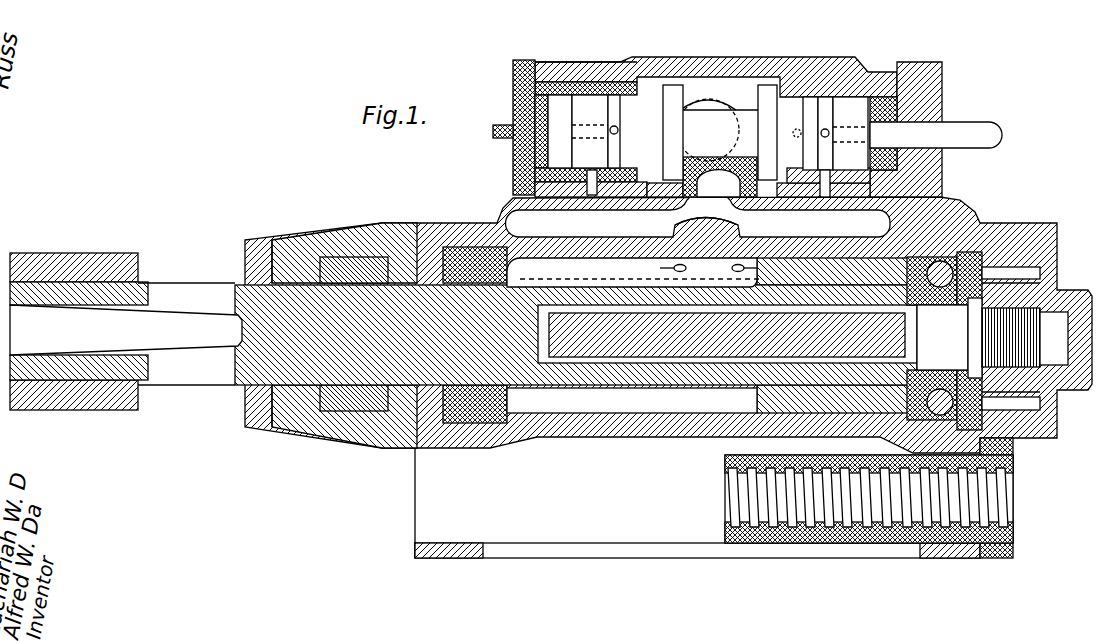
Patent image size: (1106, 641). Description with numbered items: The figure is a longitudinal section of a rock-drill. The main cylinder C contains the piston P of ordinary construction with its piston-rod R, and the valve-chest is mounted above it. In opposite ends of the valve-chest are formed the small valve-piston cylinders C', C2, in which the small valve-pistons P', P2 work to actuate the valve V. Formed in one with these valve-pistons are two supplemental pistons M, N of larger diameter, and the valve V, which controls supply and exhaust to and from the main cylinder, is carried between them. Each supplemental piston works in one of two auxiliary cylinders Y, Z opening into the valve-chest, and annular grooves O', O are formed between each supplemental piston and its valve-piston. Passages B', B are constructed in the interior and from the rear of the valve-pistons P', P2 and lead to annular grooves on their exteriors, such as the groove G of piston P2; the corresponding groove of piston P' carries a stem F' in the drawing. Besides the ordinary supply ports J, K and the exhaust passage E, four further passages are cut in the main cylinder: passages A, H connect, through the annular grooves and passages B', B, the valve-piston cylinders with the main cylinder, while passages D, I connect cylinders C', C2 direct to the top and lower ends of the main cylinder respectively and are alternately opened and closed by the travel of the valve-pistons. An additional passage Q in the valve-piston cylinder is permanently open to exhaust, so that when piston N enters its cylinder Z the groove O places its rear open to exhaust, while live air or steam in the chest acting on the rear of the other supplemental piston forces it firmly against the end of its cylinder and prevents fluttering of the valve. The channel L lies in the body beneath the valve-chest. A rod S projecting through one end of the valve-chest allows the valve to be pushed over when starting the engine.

The passage A is at (708, 595).
The passage B is at (768, 378).
The cylinder C is at (681, 305).
The passage D is at (561, 160).
The exhaust passage E is at (706, 215).
The valve stem F' is at (623, 131).
The annular groove G is at (818, 153).
The passage H is at (814, 190).
The passage I is at (500, 290).
The supply port J is at (698, 217).
The supply port K is at (817, 223).
The channel L is at (633, 272).
The supplemental piston M is at (673, 132).
The supplemental piston N is at (767, 132).
The annular groove O is at (807, 69).
The annular groove O' is at (650, 99).
The piston P is at (727, 348).
The valve-piston P' is at (590, 131).
The valve-piston P2 is at (850, 133).
The additional passage Q is at (797, 125).
The piston-rod R is at (663, 325).
The rod S is at (936, 135).
The valve V is at (720, 177).
The auxiliary cylinder Y is at (647, 75).
The auxiliary cylinder Z is at (780, 77).
The passage B' is at (594, 166).
The valve-piston cylinder C' is at (560, 131).
The valve-piston cylinder C2 is at (872, 91).